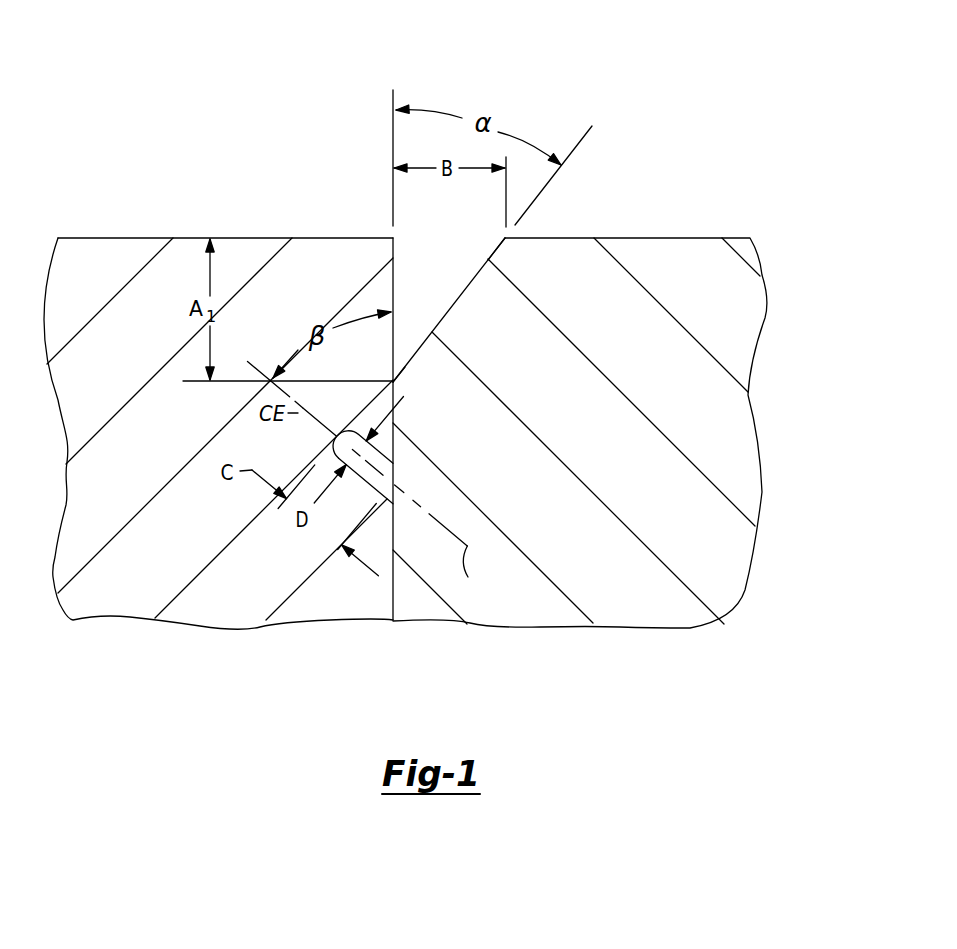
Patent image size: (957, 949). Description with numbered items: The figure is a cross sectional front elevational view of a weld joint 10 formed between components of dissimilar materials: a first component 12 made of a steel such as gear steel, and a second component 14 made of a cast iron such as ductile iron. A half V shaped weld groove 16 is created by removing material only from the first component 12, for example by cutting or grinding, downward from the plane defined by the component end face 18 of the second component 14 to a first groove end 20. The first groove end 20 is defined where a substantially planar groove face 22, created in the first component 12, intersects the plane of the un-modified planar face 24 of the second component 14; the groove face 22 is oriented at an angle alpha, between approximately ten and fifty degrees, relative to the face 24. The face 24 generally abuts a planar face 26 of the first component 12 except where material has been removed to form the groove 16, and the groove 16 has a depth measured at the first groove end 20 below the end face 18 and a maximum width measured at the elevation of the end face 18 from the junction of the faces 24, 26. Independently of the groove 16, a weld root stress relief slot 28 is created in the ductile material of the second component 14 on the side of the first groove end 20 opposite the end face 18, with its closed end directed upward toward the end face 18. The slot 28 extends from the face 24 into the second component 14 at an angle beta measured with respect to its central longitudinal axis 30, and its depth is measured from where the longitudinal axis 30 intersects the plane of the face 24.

The weld joint 10 is at (515, 95).
The first component 12 is at (672, 405).
The second component 14 is at (126, 466).
The half V shaped weld groove 16 is at (487, 258).
The component end face 18 is at (322, 237).
The first groove end 20 is at (394, 383).
The groove face 22 is at (473, 276).
The un-modified planar face 24 is at (396, 271).
The planar face 26 is at (391, 593).
The weld root stress relief slot 28 is at (360, 446).
The central longitudinal axis 30 is at (473, 583).